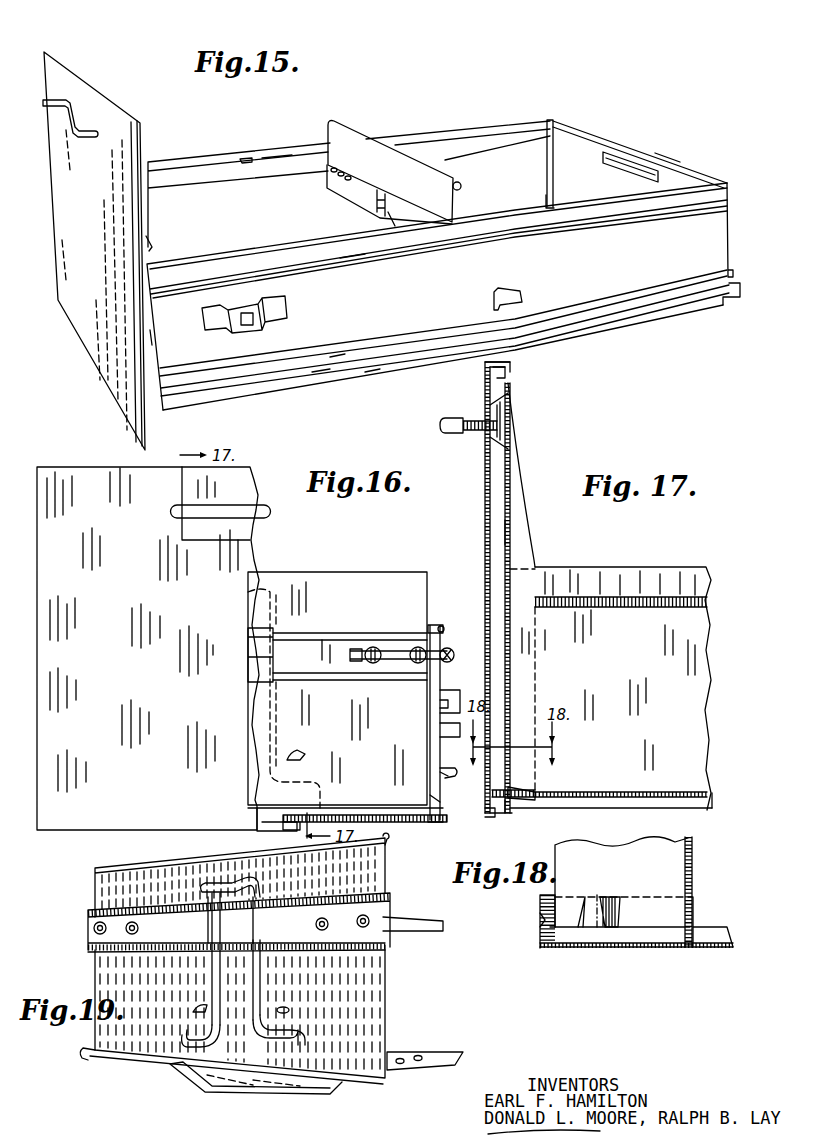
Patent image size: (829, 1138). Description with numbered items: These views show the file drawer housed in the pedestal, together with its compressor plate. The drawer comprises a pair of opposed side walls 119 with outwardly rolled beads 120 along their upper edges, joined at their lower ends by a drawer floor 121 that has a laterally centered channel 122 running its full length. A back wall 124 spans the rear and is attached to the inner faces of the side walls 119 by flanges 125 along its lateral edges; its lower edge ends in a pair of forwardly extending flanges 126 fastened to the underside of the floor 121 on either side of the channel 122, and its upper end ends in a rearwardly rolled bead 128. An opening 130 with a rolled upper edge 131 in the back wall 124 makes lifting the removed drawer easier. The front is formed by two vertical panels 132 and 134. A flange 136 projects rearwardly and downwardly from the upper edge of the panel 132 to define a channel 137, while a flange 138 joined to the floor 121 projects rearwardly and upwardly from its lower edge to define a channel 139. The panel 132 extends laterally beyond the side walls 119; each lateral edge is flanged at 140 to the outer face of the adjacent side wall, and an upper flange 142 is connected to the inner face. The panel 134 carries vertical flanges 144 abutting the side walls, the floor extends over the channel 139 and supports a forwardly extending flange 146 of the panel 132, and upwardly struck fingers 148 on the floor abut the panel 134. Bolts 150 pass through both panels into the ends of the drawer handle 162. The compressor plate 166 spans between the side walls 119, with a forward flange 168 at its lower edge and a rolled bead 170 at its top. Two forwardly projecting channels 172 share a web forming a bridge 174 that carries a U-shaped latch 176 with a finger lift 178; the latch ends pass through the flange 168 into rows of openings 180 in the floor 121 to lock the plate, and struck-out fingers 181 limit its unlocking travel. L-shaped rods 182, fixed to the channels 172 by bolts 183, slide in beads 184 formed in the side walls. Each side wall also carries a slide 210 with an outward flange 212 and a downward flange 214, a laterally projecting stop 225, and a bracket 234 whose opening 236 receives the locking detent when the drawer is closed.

In FIG. 15, the side walls 119 is at (260, 219).
In FIG. 16, the side walls 119 is at (437, 800).
In FIG. 17, the side walls 119 is at (652, 667).
In FIG. 18, the side walls 119 is at (693, 870).
In FIG. 15, the outwardly rolled beads 120 is at (522, 200).
In FIG. 16, the outwardly rolled beads 120 is at (441, 625).
In FIG. 16, the drawer floor 121 is at (400, 808).
In FIG. 17, the drawer floor 121 is at (617, 790).
In FIG. 18, the drawer floor 121 is at (647, 842).
In FIG. 19, the drawer floor 121 is at (445, 1051).
In FIG. 16, the channel 122 is at (262, 820).
In FIG. 17, the channel 122 is at (712, 806).
In FIG. 19, the channel 122 is at (207, 1093).
In FIG. 15, the back wall 124 is at (587, 148).
In FIG. 15, the flanges 125 is at (551, 118).
In FIG. 16, the forwardly extending flanges 126 is at (398, 822).
In FIG. 15, the rearwardly rolled bead 128 is at (664, 153).
In FIG. 15, the opening 130 is at (605, 169).
In FIG. 15, the rolled upper edge 131 is at (628, 151).
In FIG. 15, the panel 132 is at (85, 333).
In FIG. 16, the panel 132 is at (127, 596).
In FIG. 17, the panel 132 is at (485, 518).
In FIG. 18, the panel 132 is at (555, 949).
In FIG. 17, the panel 134 is at (511, 533).
In FIG. 18, the panel 134 is at (541, 910).
In FIG. 17, the flange 136 is at (510, 374).
In FIG. 17, the channel 137 is at (510, 364).
In FIG. 17, the flange 138 is at (520, 806).
In FIG. 17, the channel 139 is at (498, 815).
In FIG. 15, the flange 140 is at (153, 338).
In FIG. 18, the flange 140 is at (694, 914).
In FIG. 17, the flange 142 is at (519, 468).
In FIG. 18, the vertically extending flanges 144 is at (686, 929).
In FIG. 17, the forwardly extending flange 146 is at (500, 790).
In FIG. 18, the forwardly extending flange 146 is at (609, 936).
In FIG. 15, the upwardly struck fingers 148 is at (154, 246).
In FIG. 17, the upwardly struck fingers 148 is at (528, 790).
In FIG. 18, the upwardly struck fingers 148 is at (600, 897).
In FIG. 17, the bolts 150 is at (498, 425).
In FIG. 15, the drawer handle 162 is at (77, 137).
In FIG. 16, the drawer handle 162 is at (270, 512).
In FIG. 17, the drawer handle 162 is at (447, 420).
In FIG. 15, the compressor plate 166 is at (357, 143).
In FIG. 16, the compressor plate 166 is at (371, 569).
In FIG. 19, the compressor plate 166 is at (115, 888).
In FIG. 19, the forwardly extending flange 168 is at (86, 1052).
In FIG. 15, the rolled bead 170 is at (462, 189).
In FIG. 19, the rolled bead 170 is at (152, 862).
In FIG. 15, the channels 172 is at (365, 191).
In FIG. 16, the channels 172 is at (323, 651).
In FIG. 19, the channels 172 is at (362, 907).
In FIG. 15, the bridge 174 is at (337, 186).
In FIG. 16, the bridge 174 is at (262, 651).
In FIG. 19, the bridge 174 is at (235, 930).
In FIG. 15, the latch 176 is at (393, 220).
In FIG. 16, the latch 176 is at (277, 739).
In FIG. 19, the latch 176 is at (218, 985).
In FIG. 19, the finger lift 178 is at (233, 883).
In FIG. 19, the openings 180 is at (417, 1055).
In FIG. 16, the fingers 181 is at (308, 756).
In FIG. 19, the fingers 181 is at (290, 1005).
In FIG. 15, the L-shaped rods 182 is at (275, 166).
In FIG. 16, the L-shaped rods 182 is at (396, 650).
In FIG. 19, the L-shaped rods 182 is at (441, 920).
In FIG. 15, the bolts 183 is at (330, 173).
In FIG. 16, the bolts 183 is at (373, 646).
In FIG. 15, the longitudinally extending beads 184 is at (224, 162).
In FIG. 16, the longitudinally extending beads 184 is at (449, 650).
In FIG. 17, the longitudinally extending beads 184 is at (632, 608).
In FIG. 15, the slide 210 is at (338, 352).
In FIG. 16, the slide 210 is at (446, 774).
In FIG. 15, the outwardly extending flange 212 is at (318, 370).
In FIG. 15, the downwardly extending flange 214 is at (370, 370).
In FIG. 15, the stop 225 is at (497, 298).
In FIG. 16, the stop 225 is at (447, 766).
In FIG. 15, the bracket 234 is at (285, 299).
In FIG. 16, the bracket 234 is at (448, 690).
In FIG. 15, the opening 236 is at (256, 325).
In FIG. 16, the opening 236 is at (440, 704).